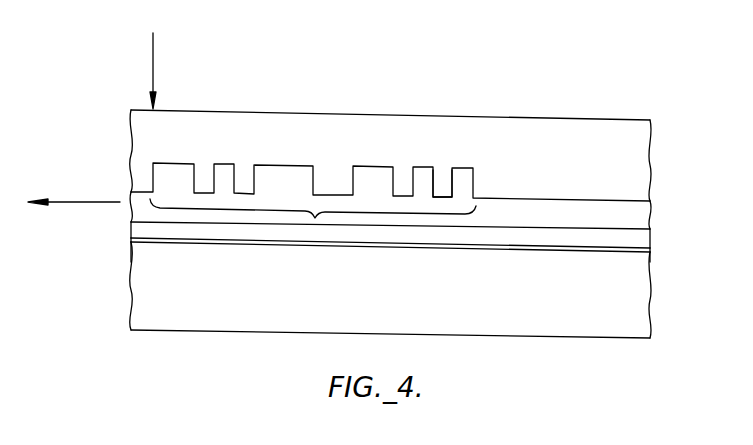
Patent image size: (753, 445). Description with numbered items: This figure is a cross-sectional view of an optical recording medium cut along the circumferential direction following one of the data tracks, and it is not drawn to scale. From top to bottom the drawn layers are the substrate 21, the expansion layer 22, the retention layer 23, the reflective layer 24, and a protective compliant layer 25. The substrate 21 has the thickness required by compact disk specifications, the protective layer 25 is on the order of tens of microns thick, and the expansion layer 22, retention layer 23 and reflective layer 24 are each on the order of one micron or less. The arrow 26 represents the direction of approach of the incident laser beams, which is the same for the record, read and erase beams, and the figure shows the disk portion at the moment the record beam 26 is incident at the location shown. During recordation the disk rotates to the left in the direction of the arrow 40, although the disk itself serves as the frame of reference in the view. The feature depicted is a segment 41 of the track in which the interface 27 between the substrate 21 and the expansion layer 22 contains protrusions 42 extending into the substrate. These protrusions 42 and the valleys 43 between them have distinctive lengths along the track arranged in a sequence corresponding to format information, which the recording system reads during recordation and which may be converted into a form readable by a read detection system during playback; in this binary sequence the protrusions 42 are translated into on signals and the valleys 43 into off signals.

The substrate 21 is at (633, 152).
The expansion layer 22 is at (635, 221).
The retention layer 23 is at (635, 244).
The reflective layer 24 is at (650, 252).
The protective compliant layer 25 is at (633, 297).
The arrow representing incident laser beams 26 is at (153, 63).
The interface 27 is at (640, 198).
The arrow indicating direction of disk rotation 40 is at (65, 202).
The segment of the track 41 is at (315, 218).
The protrusions 42 is at (421, 167).
The valleys 43 is at (441, 189).